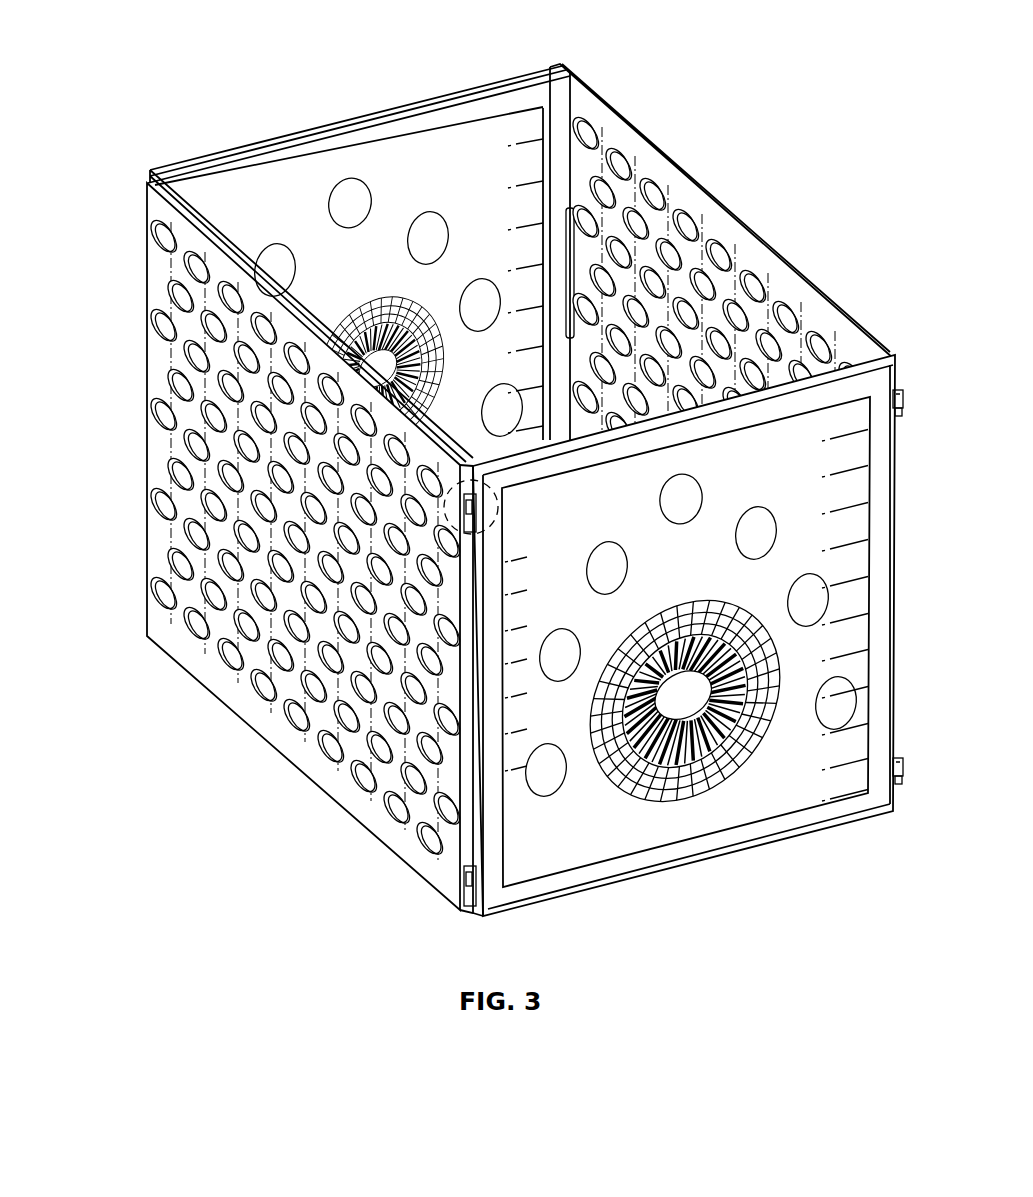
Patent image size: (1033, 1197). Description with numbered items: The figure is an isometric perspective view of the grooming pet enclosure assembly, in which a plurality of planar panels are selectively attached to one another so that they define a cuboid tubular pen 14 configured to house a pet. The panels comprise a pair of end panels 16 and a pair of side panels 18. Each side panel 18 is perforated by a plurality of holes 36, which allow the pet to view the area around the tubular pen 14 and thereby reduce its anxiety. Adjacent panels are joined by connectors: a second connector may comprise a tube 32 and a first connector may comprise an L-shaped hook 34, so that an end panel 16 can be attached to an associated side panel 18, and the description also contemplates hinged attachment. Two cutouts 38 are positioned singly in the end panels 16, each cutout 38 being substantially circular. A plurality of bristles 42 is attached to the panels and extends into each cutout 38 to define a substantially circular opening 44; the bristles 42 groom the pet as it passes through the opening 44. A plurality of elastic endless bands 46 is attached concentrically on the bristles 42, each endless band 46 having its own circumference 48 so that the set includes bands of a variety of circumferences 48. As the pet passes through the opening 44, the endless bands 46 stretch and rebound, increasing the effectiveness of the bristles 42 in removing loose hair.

The tubular pen 14 is at (130, 45).
The end panel 16 is at (253, 192).
The side panel 18 is at (743, 227).
The holes 36 is at (300, 630).
The circumference 48 is at (390, 393).
The opening 44 is at (690, 690).
The cutout 38 is at (727, 683).
The bristles 42 is at (712, 733).
The endless band 46 is at (706, 760).
The L-shaped hook 34 is at (903, 758).
The tube 32 is at (903, 778).